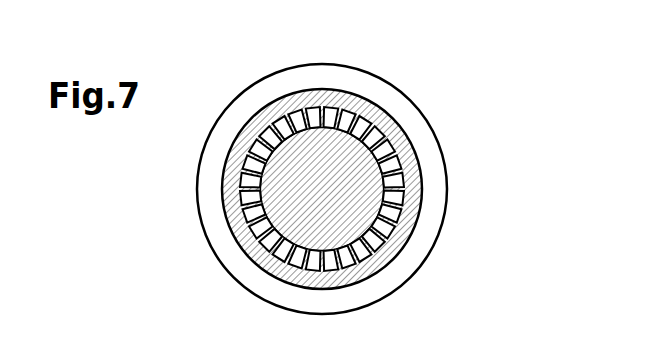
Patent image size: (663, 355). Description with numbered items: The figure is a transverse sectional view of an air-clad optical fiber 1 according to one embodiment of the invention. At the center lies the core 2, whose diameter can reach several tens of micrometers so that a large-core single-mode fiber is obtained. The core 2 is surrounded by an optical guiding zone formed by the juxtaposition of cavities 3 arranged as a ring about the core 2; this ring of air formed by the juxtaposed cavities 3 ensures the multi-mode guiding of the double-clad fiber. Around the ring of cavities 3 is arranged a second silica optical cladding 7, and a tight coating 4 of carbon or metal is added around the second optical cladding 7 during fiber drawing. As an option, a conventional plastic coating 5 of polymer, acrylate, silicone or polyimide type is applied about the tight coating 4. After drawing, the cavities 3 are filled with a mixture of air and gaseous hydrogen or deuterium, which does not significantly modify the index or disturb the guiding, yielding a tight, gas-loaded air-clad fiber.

The electric motor 1 is at (453, 86).
The core 2 is at (332, 146).
The cavities 3 is at (403, 154).
The tight coating 4 is at (222, 198).
The conventional coating 5 is at (228, 253).
The second optical cladding 7 is at (228, 165).